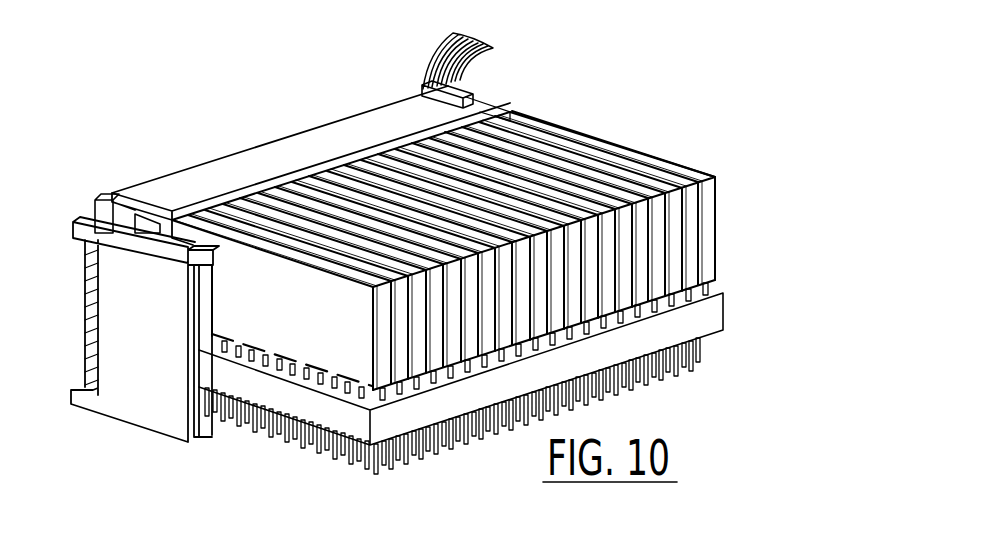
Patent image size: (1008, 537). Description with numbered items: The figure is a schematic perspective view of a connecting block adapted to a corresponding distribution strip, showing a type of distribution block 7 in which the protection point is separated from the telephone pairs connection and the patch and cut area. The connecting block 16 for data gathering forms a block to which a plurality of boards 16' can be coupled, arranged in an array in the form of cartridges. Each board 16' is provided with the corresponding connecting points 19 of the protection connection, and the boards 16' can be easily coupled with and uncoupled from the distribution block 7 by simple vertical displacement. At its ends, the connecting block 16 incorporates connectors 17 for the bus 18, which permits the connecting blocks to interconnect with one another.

The distribution block 7 is at (113, 403).
The connecting block 16 is at (413, 238).
The boards 16' is at (292, 406).
The connectors 17 is at (110, 207).
The bus 18 is at (480, 62).
The connecting points 19 is at (410, 399).